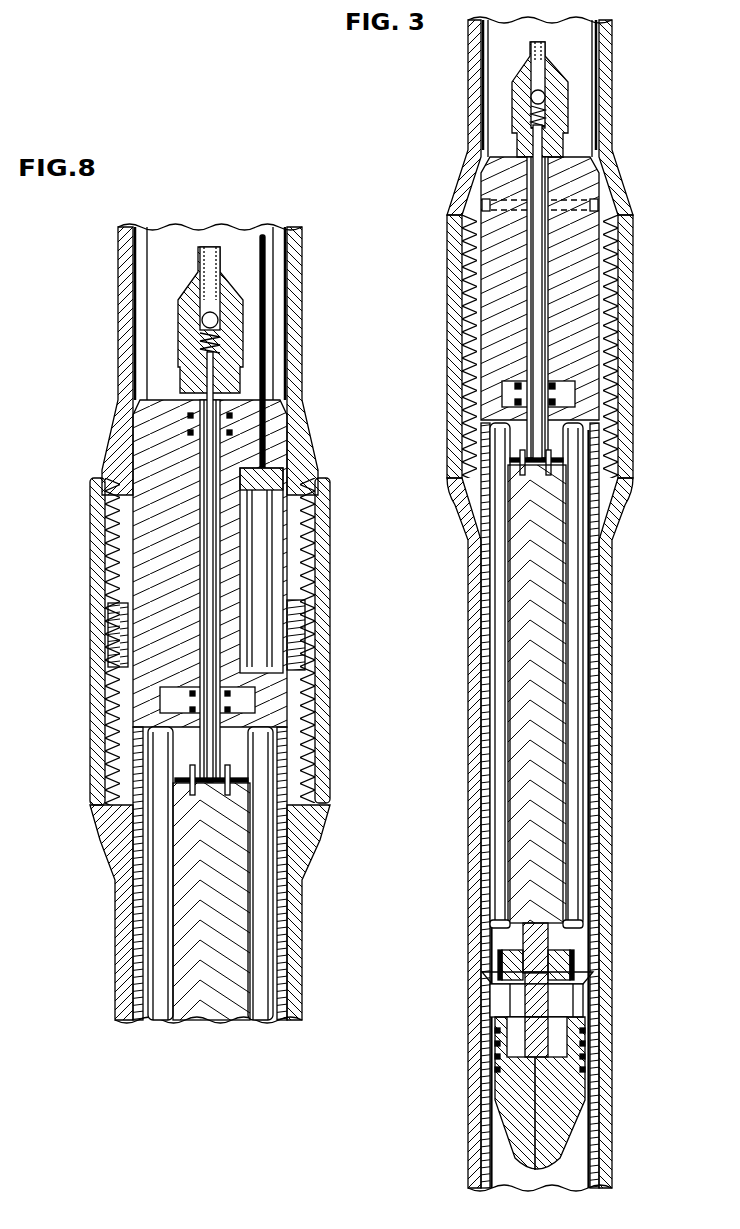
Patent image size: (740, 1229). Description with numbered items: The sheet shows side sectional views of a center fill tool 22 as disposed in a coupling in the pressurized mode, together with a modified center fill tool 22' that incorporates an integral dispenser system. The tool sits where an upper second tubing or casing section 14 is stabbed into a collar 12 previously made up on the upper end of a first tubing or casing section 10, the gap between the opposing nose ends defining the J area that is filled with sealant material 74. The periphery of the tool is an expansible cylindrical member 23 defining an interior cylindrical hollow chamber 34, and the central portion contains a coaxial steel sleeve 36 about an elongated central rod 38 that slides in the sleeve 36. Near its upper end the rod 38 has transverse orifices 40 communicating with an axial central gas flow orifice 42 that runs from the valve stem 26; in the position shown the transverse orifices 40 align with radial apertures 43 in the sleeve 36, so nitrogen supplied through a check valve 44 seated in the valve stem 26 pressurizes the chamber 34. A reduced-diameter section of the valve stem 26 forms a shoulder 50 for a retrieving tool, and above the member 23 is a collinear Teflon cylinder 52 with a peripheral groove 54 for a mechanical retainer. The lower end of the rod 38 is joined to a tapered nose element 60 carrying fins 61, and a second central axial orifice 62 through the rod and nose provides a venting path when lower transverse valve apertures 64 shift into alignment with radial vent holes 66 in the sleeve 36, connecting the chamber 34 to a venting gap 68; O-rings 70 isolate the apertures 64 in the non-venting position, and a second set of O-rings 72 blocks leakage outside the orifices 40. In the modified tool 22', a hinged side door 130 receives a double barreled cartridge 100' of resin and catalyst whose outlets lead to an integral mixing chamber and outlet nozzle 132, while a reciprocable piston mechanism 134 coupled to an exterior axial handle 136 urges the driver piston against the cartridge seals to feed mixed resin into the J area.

In FIG. 3, the first tubing or casing section 10 is at (612, 728).
In FIG. 3, the collar 12 is at (630, 392).
In FIG. 8, the collar 12 is at (324, 766).
In FIG. 3, the second tubing or casing section 14 is at (612, 148).
In FIG. 3, the center fill tool 22 is at (581, 997).
In FIG. 8, the modified center fill tool 22' is at (188, 359).
In FIG. 3, the expansible cylindrical member 23 is at (588, 795).
In FIG. 3, the valve stem 26 is at (562, 96).
In FIG. 3, the interior cylindrical hollow chamber 34 is at (573, 825).
In FIG. 3, the steel sleeve 36 is at (557, 860).
In FIG. 3, the central rod 38 is at (537, 905).
In FIG. 3, the transverse orifices 40 is at (543, 467).
In FIG. 3, the axial central gas flow orifice 42 is at (530, 281).
In FIG. 3, the radial apertures 43 is at (540, 463).
In FIG. 3, the check valve 44 is at (528, 112).
In FIG. 3, the shoulder 50 is at (518, 90).
In FIG. 3, the Teflon cylinder 52 is at (585, 240).
In FIG. 3, the peripheral groove 54 is at (592, 206).
In FIG. 3, the nose element 60 is at (578, 1128).
In FIG. 3, the fins 61 is at (480, 1072).
In FIG. 3, the second central axial orifice 62 is at (530, 1113).
In FIG. 3, the lower transverse valve apertures 64 is at (493, 983).
In FIG. 3, the radial vent holes 66 is at (505, 922).
In FIG. 3, the venting gap 68 is at (513, 948).
In FIG. 3, the O-rings 70 is at (493, 953).
In FIG. 3, the second set of O-rings 72 is at (570, 405).
In FIG. 3, the sealant material 74 is at (473, 352).
In FIG. 8, the double barreled cartridge 100' is at (320, 570).
In FIG. 8, the hinged side door 130 is at (303, 615).
In FIG. 8, the integral mixing chamber and outlet nozzle 132 is at (287, 668).
In FIG. 8, the reciprocable piston mechanism 134 is at (280, 488).
In FIG. 8, the exterior axial handle 136 is at (268, 300).